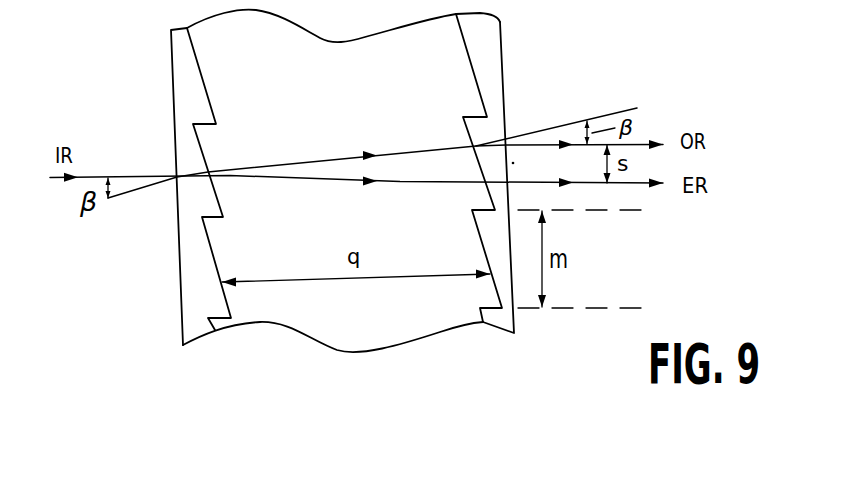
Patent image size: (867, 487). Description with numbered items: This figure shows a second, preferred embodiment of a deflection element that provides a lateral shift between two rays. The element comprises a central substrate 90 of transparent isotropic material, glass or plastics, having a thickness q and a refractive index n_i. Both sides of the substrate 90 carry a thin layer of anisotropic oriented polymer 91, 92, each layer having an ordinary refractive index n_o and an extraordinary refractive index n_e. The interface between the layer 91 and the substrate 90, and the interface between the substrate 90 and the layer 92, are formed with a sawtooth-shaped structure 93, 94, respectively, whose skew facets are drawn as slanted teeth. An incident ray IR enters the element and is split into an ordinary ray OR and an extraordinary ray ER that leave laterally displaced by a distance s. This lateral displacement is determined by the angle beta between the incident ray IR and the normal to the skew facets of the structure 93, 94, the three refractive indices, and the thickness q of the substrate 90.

The central substrate 90 is at (356, 338).
The thin layer of anisotropic oriented polymer 91 is at (179, 186).
The thin layer of anisotropic oriented polymer 92 is at (525, 188).
The sawtooth-shaped structure 93 is at (210, 269).
The sawtooth-shaped structure 94 is at (488, 263).